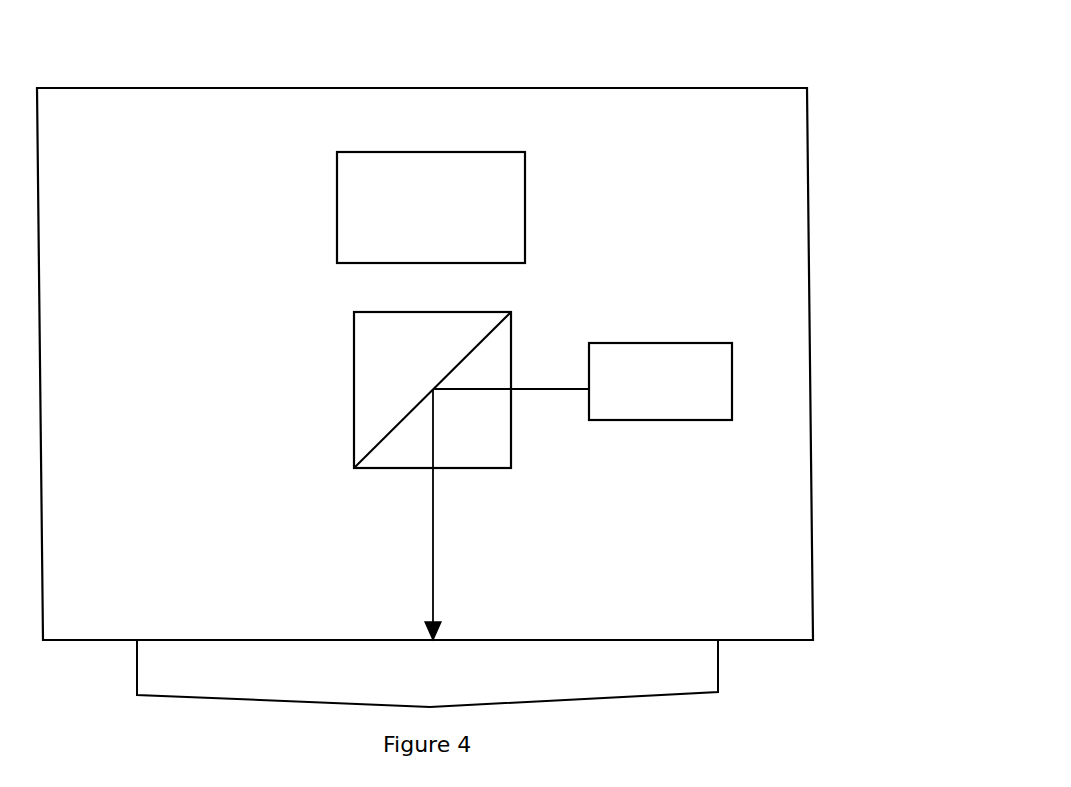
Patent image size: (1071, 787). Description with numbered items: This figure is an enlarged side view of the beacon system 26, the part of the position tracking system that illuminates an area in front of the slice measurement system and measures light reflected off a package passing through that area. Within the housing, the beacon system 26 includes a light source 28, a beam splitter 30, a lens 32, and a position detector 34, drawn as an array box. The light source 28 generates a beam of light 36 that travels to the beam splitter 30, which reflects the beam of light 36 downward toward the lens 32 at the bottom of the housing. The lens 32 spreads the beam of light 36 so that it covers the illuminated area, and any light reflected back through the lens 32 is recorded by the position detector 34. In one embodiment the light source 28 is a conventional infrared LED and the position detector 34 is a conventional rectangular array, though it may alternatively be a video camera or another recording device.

The beacon system 26 is at (808, 197).
The light source 28 is at (734, 356).
The beam splitter 30 is at (512, 342).
The lens 32 is at (719, 653).
The position detector 34 is at (462, 151).
The beam of light 36 is at (542, 390).